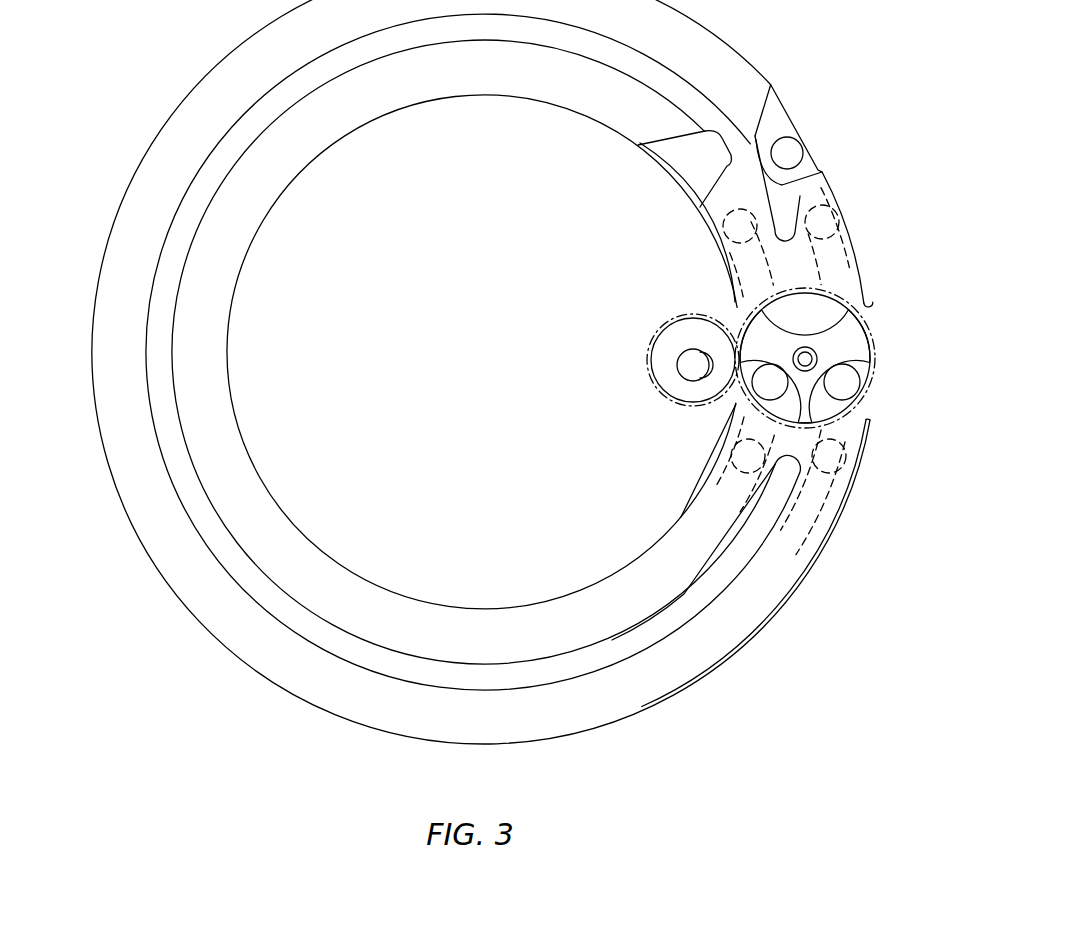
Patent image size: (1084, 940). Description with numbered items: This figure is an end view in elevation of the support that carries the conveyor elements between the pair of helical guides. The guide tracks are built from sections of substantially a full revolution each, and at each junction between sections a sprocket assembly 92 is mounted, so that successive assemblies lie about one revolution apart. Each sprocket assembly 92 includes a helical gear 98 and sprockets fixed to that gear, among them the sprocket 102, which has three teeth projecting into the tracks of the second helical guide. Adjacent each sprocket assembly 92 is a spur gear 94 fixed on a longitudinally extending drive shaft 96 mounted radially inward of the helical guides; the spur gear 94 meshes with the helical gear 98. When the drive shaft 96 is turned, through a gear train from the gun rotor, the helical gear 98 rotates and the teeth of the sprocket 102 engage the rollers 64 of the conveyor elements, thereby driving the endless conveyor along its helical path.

The roller 64 is at (790, 136).
The sprocket assembly 92 is at (738, 327).
The spur gear 94 is at (686, 404).
The drive shaft 96 is at (677, 369).
The helical gear 98 is at (874, 371).
The sprocket 102 is at (850, 333).